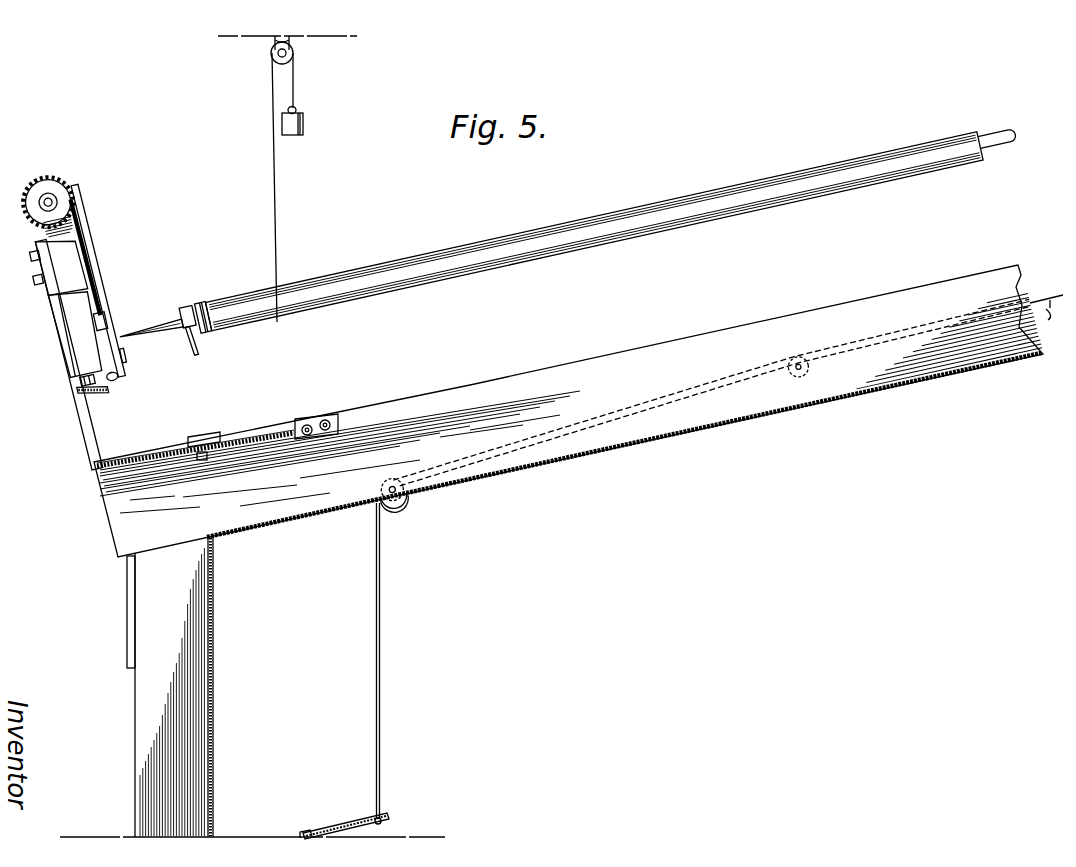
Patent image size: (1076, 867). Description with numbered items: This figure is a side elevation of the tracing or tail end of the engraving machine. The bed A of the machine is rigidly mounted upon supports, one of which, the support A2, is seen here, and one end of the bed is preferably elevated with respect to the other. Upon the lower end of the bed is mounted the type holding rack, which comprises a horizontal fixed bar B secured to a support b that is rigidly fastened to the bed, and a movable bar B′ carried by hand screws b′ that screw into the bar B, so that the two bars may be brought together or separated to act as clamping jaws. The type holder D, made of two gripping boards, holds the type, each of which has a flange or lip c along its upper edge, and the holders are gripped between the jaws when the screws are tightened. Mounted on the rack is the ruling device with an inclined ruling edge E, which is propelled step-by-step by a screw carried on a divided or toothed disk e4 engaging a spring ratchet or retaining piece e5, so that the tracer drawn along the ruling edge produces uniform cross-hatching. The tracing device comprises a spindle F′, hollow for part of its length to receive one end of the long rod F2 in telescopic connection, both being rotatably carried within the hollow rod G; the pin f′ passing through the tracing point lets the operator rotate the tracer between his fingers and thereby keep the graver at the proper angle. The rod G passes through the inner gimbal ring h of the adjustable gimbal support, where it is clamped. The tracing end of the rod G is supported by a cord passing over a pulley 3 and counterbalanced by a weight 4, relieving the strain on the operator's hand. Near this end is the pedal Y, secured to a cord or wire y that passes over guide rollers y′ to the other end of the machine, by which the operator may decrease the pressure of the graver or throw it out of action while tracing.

The pulley 3 is at (293, 57).
The weight 4 is at (302, 120).
The inner gimbal ring h is at (275, 243).
The bed A is at (745, 413).
The support A2 is at (200, 648).
The support b is at (78, 352).
The hand screws b′ is at (114, 393).
The fixed bar B is at (63, 255).
The movable bar B′ is at (52, 339).
The flange or lip c is at (140, 350).
The type holder D is at (115, 301).
The inclined ruling edge E is at (117, 276).
The divided or toothed disk e4 is at (58, 187).
The spring ratchet or retaining piece e5 is at (101, 243).
The spindle F′ is at (181, 320).
The pin f′ is at (188, 359).
The long rod F2 is at (994, 117).
The hollow rod G is at (590, 212).
The cord or wire y is at (397, 637).
The guide rollers y′ is at (708, 415).
The pedal Y is at (358, 815).